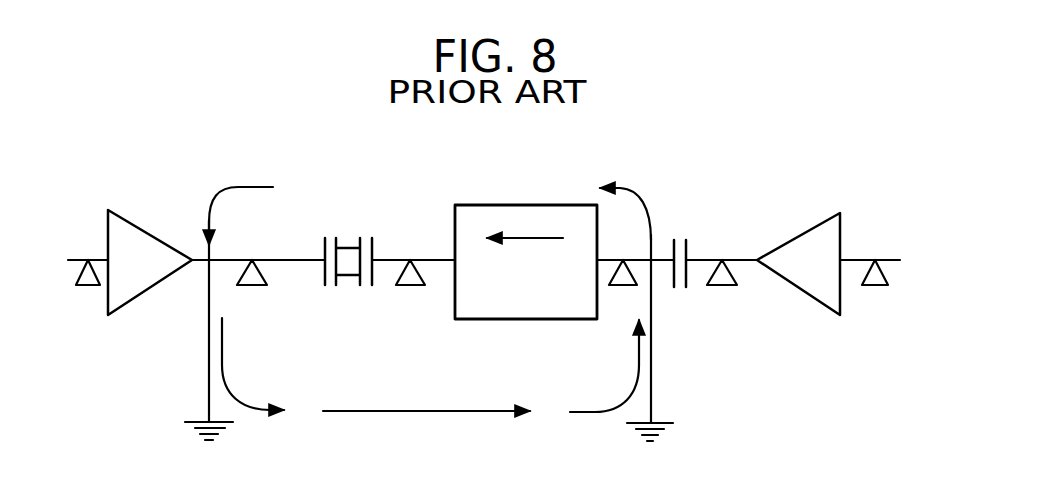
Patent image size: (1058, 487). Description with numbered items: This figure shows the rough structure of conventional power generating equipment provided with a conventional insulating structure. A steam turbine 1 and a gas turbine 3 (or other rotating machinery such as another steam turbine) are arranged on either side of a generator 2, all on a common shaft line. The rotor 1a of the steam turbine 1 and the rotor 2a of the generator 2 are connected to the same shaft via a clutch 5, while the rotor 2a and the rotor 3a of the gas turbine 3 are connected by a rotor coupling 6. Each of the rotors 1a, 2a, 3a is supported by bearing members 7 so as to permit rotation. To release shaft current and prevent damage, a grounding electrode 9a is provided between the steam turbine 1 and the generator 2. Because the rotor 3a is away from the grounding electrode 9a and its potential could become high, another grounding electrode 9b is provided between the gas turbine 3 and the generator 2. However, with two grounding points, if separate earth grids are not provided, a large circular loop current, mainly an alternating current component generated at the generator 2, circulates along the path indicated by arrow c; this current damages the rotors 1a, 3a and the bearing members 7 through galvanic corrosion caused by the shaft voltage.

The steam turbine 1 is at (150, 228).
The rotor of the steam turbine 1a is at (294, 258).
The generator 2 is at (525, 204).
The rotor of the generator 2a is at (385, 258).
The gas turbine 3 is at (815, 225).
The rotor of the gas turbine 3a is at (752, 258).
The clutch 5 is at (347, 278).
The rotor coupling 6 is at (689, 240).
The bearing members 7 is at (252, 288).
The grounding electrode 9a is at (209, 395).
The grounding electrode 9b is at (651, 398).
The arrow indicating circular loop current c is at (255, 187).